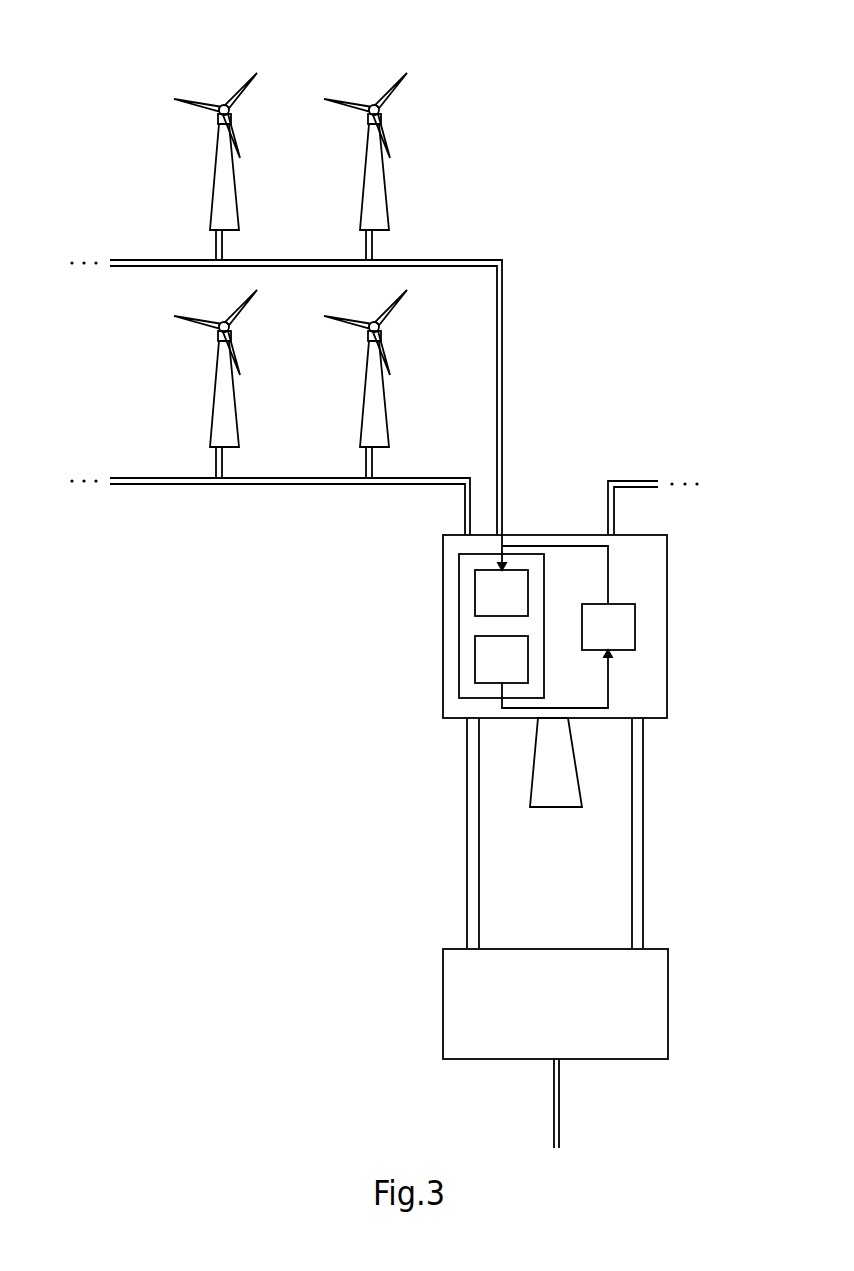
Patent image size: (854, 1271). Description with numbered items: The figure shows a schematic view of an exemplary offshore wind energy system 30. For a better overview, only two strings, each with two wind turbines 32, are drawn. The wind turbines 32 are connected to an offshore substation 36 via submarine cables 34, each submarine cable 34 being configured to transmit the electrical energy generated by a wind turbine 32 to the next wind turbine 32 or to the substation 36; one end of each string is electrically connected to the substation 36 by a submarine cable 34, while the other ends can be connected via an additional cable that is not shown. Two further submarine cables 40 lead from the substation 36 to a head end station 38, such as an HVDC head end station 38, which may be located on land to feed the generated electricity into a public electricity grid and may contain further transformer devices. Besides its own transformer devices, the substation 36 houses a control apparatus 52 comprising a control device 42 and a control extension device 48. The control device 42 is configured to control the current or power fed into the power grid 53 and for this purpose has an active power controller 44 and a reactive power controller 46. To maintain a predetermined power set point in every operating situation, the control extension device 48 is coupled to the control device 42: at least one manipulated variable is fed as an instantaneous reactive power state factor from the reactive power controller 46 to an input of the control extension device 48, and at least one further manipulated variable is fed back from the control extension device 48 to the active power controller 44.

The offshore wind energy system 30 is at (543, 92).
The wind turbine 32 is at (213, 185).
The submarine cable 34 is at (475, 268).
The offshore substation 36 is at (668, 595).
The head end station 38 is at (670, 980).
The submarine cable 40 is at (467, 865).
The control device 42 is at (460, 623).
The active power controller 44 is at (517, 605).
The reactive power controller 46 is at (517, 671).
The control extension device 48 is at (624, 640).
The control apparatus 52 is at (642, 567).
The power grid 53 is at (560, 1112).